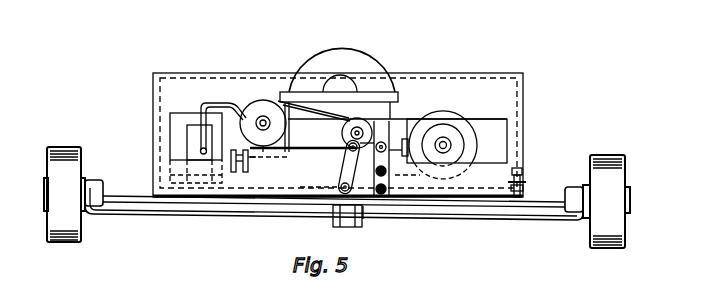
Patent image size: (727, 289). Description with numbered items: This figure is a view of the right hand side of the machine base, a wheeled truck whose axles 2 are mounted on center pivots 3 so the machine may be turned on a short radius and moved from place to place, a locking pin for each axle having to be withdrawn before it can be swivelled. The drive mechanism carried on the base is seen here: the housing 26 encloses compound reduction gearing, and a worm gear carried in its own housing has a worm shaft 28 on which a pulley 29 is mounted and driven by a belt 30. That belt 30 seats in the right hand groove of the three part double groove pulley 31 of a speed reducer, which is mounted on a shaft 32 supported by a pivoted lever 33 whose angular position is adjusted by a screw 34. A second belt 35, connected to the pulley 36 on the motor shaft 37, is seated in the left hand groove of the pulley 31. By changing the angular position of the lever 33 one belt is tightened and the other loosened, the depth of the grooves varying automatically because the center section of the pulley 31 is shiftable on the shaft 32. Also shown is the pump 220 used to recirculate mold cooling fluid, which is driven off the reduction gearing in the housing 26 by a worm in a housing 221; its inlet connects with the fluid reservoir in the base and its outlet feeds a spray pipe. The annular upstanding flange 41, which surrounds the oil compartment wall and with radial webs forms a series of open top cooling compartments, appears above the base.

The axle 2 is at (465, 212).
The center pivot 3 is at (356, 224).
The housing 26 is at (358, 46).
The worm shaft 28 is at (258, 100).
The pulley 29 is at (228, 100).
The belt 30 is at (324, 152).
The three part double groove pulley 31 is at (340, 134).
The shaft 32 is at (343, 145).
The pivoted lever 33 is at (341, 170).
The screw 34 is at (399, 140).
The belt 35 is at (424, 123).
The pulley 36 is at (462, 115).
The motor shaft 37 is at (451, 141).
The annular upstanding flange 41 is at (521, 76).
The pump 220 is at (196, 112).
The housing 221 is at (254, 171).